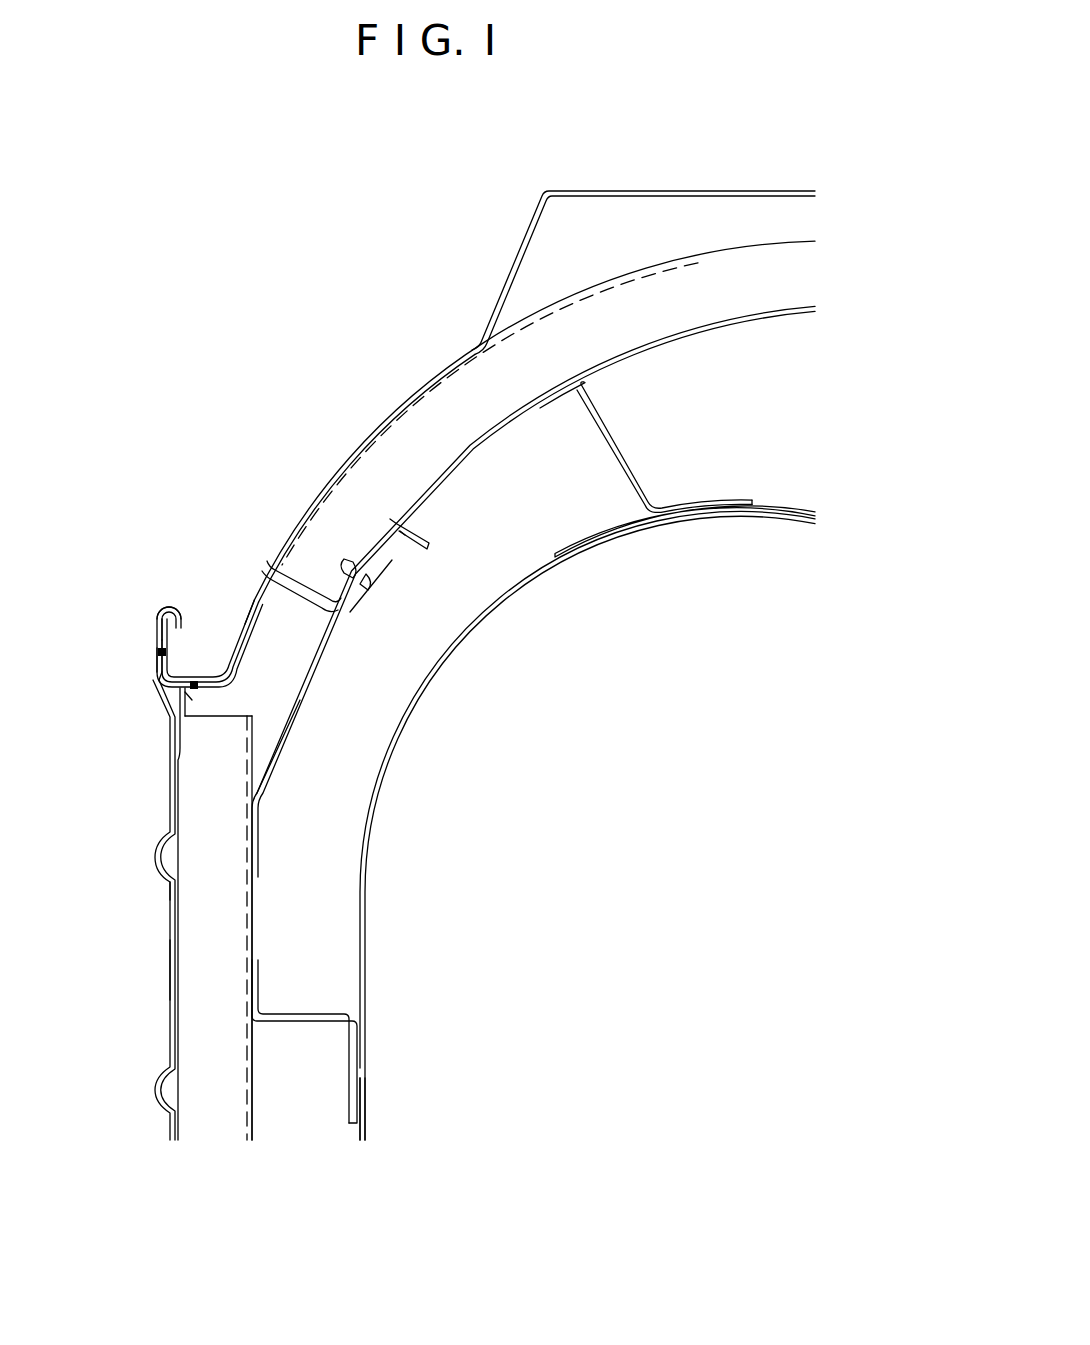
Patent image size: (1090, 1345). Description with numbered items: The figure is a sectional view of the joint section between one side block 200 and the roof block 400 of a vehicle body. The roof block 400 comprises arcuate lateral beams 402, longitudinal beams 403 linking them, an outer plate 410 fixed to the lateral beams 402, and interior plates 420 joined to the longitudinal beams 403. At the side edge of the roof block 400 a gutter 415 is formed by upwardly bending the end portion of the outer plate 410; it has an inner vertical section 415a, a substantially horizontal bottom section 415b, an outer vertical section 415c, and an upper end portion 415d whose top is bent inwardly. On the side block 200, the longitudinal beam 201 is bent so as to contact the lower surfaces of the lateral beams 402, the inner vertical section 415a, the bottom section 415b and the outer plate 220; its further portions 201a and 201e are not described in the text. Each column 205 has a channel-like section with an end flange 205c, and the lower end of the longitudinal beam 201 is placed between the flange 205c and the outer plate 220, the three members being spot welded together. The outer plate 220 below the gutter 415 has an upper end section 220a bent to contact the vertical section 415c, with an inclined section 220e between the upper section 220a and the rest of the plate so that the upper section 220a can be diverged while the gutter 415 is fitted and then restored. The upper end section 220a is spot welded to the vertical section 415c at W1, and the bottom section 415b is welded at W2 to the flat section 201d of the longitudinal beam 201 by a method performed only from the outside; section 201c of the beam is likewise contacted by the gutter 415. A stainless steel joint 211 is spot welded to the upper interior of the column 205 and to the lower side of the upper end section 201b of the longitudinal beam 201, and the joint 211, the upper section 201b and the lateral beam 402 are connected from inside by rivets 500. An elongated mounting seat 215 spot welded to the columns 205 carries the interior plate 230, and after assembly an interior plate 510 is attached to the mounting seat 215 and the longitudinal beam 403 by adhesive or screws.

The roof block 400 is at (443, 295).
The outer plate 410 is at (413, 392).
The lateral beam 402 is at (365, 478).
The longitudinal beam 403 is at (642, 456).
The gutter 415 is at (201, 531).
The inner vertical section 415a is at (262, 576).
The bottom section 415b is at (178, 668).
The vertical section 415c is at (170, 642).
The upper end portion 415d is at (168, 606).
The outer plate 220 is at (169, 822).
The upper end section 220a is at (157, 624).
The inclined section 220e is at (160, 676).
The spot weld W1 is at (158, 650).
The weld W2 is at (190, 688).
The longitudinal beam 201 is at (276, 596).
The roof panel flange 201a is at (440, 542).
The upper end section 201b is at (411, 550).
The longitudinal beam section 201c is at (253, 636).
The flat section 201d is at (168, 698).
The roof panel end flange 201e is at (205, 716).
The joint 211 is at (328, 681).
The rivet 500 is at (370, 586).
The interior plate 510 is at (520, 592).
The interior plate 420 is at (776, 522).
The column 205 is at (208, 1106).
The end flange 205c is at (181, 916).
The side block 200 is at (164, 962).
The mounting seat 215 is at (292, 1026).
The interior plate 230 is at (372, 1108).